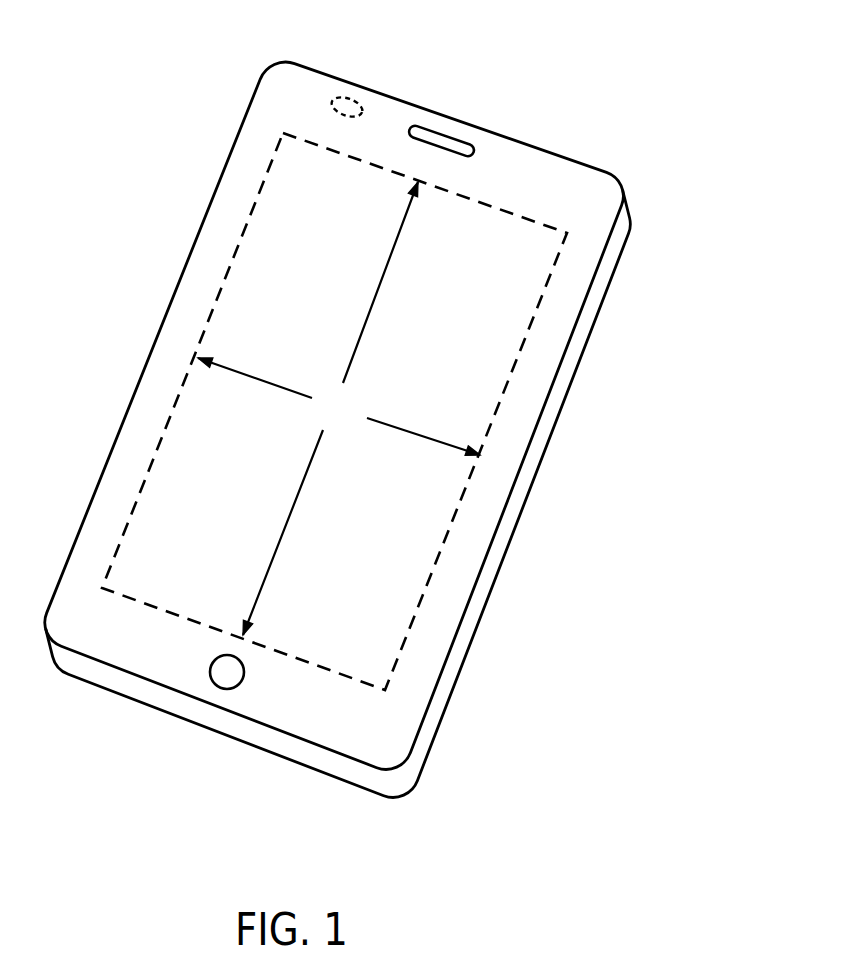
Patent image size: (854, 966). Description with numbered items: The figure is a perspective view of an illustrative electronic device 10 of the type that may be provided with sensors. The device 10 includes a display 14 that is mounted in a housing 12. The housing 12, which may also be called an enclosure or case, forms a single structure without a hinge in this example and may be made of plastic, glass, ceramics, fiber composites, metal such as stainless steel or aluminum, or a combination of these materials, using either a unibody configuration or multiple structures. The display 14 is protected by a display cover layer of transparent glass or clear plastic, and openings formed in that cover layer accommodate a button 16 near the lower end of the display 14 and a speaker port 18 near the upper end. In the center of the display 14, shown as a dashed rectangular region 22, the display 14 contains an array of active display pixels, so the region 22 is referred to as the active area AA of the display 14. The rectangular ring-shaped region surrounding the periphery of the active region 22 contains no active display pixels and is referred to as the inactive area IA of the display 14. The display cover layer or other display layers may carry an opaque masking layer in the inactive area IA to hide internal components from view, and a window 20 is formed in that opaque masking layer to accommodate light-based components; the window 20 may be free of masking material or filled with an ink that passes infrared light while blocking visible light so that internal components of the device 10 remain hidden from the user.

The electronic device 10 is at (391, 400).
The housing 12 is at (597, 300).
The display 14 is at (202, 478).
The button 16 is at (227, 689).
The speaker port 18 is at (457, 133).
The window 20 is at (340, 100).
The rectangular region 22 is at (423, 597).
The active area AA is at (339, 408).
The inactive area IA is at (393, 110).